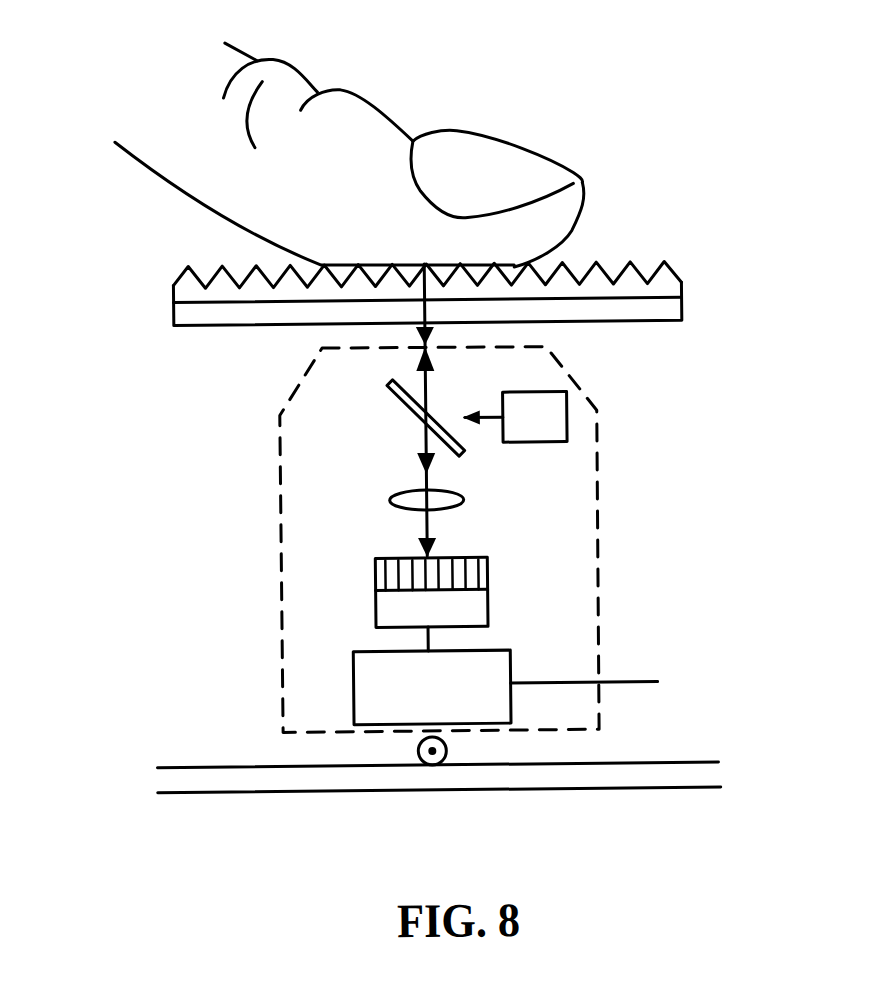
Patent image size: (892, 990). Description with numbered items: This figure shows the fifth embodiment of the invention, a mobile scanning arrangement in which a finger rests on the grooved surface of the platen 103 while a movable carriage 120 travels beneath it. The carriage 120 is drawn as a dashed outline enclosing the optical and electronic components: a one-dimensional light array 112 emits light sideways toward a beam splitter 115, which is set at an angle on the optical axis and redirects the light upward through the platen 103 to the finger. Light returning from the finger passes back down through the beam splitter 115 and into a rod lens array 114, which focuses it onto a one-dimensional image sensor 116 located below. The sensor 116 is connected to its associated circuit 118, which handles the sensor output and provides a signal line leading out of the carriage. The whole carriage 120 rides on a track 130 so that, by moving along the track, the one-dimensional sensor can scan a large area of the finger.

The platen 103 is at (200, 291).
The 1-D light array 112 is at (548, 418).
The rod lens array 114 is at (408, 501).
The beam splitter 115 is at (403, 402).
The 1-D image sensor 116 is at (389, 605).
The associated circuit 118 is at (468, 697).
The carriage 120 is at (596, 427).
The track 130 is at (657, 780).